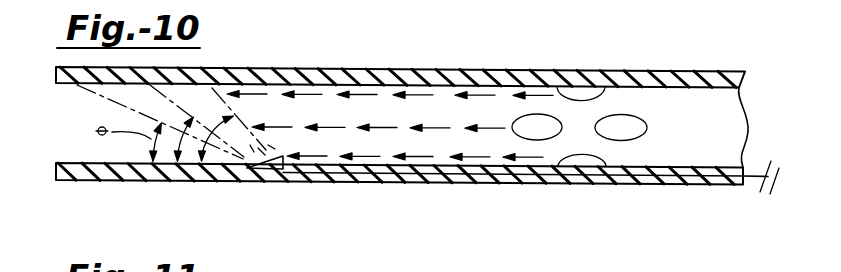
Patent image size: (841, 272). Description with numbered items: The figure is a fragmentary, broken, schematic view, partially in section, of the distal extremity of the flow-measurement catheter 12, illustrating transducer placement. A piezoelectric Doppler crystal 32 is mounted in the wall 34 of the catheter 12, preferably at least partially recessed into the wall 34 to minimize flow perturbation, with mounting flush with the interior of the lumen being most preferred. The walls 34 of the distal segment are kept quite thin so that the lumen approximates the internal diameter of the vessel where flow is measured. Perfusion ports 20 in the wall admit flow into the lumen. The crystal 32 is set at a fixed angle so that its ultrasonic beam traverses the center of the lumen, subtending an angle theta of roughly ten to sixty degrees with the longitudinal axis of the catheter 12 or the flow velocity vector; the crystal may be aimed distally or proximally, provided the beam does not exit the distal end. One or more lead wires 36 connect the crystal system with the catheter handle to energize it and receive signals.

The flow-measurement catheter 12 is at (617, 69).
The perfusion ports 20 is at (540, 114).
The piezoelectric Doppler crystal 32 is at (250, 160).
The wall 34 is at (386, 68).
The lead wires 36 is at (752, 184).